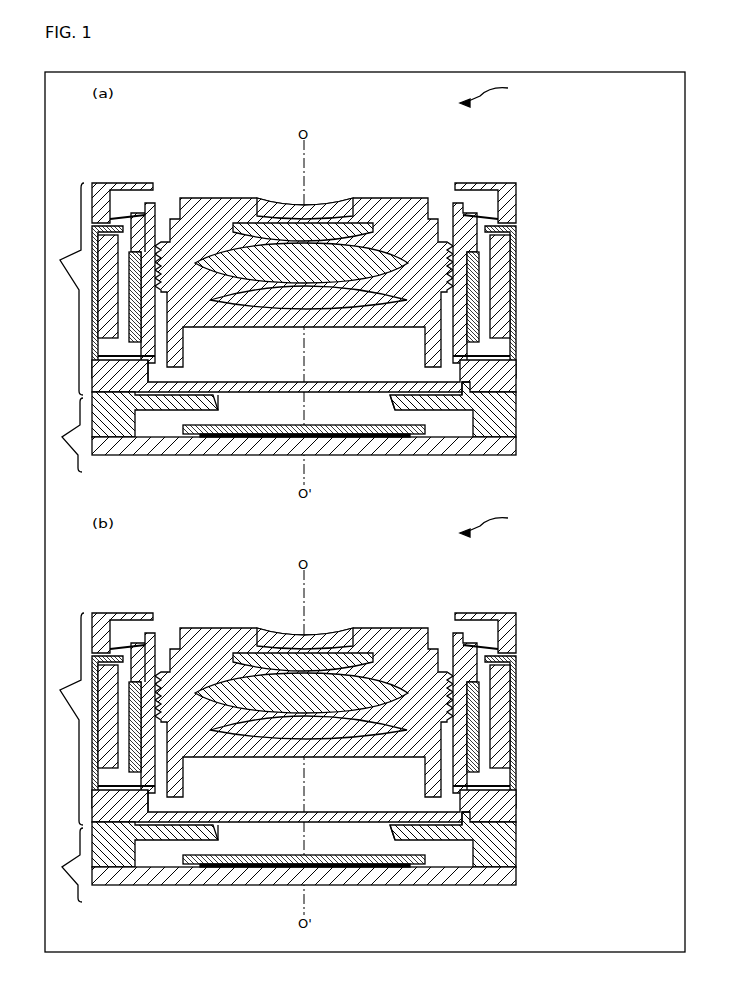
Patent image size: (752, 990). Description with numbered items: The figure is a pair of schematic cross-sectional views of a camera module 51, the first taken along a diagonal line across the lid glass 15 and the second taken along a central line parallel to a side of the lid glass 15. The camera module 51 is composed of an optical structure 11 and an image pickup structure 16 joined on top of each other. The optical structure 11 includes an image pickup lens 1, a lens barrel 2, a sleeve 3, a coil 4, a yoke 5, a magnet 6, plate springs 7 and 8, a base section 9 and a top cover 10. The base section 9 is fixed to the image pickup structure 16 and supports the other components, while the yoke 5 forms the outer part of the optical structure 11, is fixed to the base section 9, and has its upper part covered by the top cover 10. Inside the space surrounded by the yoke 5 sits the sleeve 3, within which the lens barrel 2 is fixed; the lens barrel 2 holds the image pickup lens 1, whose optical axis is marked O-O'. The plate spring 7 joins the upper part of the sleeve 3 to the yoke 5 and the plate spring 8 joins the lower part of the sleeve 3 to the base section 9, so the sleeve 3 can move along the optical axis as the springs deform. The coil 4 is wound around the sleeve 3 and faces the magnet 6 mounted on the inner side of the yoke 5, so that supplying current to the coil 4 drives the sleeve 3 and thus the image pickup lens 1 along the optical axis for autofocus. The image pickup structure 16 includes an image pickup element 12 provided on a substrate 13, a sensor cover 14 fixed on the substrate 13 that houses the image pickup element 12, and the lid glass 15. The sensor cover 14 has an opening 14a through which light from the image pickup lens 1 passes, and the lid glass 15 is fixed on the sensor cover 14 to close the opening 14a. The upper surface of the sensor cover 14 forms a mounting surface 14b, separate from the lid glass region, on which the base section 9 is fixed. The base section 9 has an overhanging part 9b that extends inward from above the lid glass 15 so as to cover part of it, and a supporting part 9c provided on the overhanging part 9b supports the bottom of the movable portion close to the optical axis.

The image pickup lens 1 is at (311, 232).
The lens barrel 2 is at (356, 210).
The sleeve 3 is at (457, 203).
The coil 4 is at (470, 290).
The yoke 5 is at (516, 255).
The magnet 6 is at (517, 310).
The plate spring 7 is at (483, 218).
The plate spring 8 is at (517, 356).
The base section 9 is at (517, 382).
The overhanging part 9b is at (150, 367).
The supporting part 9c is at (146, 205).
The top cover 10 is at (517, 195).
The optical structure 11 is at (60, 260).
The image pickup element 12 is at (297, 432).
The substrate 13 is at (470, 443).
The sensor cover 14 is at (516, 434).
The opening 14a is at (332, 407).
The mounting surface 14b is at (462, 385).
The lid glass 15 is at (216, 428).
The image pickup structure 16 is at (62, 437).
The camera module 51 is at (557, 310).